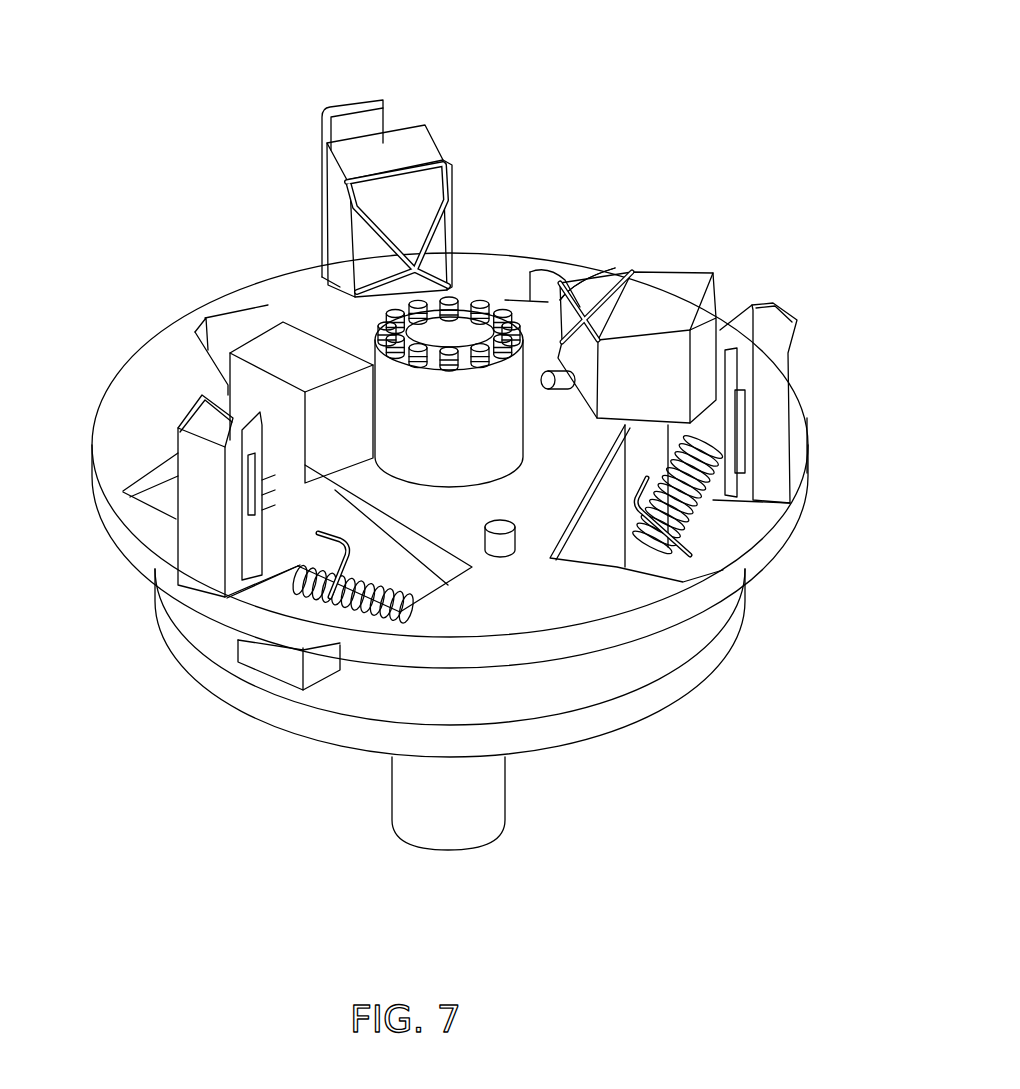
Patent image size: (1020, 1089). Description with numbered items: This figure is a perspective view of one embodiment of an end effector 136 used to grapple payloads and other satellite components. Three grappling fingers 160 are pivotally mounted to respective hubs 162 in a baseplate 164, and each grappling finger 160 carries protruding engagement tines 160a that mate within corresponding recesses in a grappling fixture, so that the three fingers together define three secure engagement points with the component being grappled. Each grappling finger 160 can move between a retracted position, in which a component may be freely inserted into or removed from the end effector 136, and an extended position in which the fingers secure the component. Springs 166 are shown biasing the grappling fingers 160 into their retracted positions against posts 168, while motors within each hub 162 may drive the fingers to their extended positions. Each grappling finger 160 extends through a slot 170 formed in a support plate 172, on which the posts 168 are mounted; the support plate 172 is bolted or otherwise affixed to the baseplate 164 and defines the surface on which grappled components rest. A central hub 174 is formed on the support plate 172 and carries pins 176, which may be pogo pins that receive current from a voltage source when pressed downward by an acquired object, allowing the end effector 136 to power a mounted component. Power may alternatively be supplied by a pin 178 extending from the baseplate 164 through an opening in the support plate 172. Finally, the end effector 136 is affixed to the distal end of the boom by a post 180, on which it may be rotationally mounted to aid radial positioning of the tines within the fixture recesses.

The end effector 136 is at (731, 70).
The grappling fingers 160 is at (477, 303).
The engagement tines 160a is at (428, 208).
The hubs 162 is at (245, 648).
The baseplate 164 is at (583, 697).
The springs 166 is at (745, 582).
The posts 168 is at (350, 103).
The slot 170 is at (393, 582).
The support plate 172 is at (555, 493).
The central hub 174 is at (560, 282).
The pins 176 is at (488, 298).
The pin 178 is at (523, 498).
The post 180 is at (393, 797).